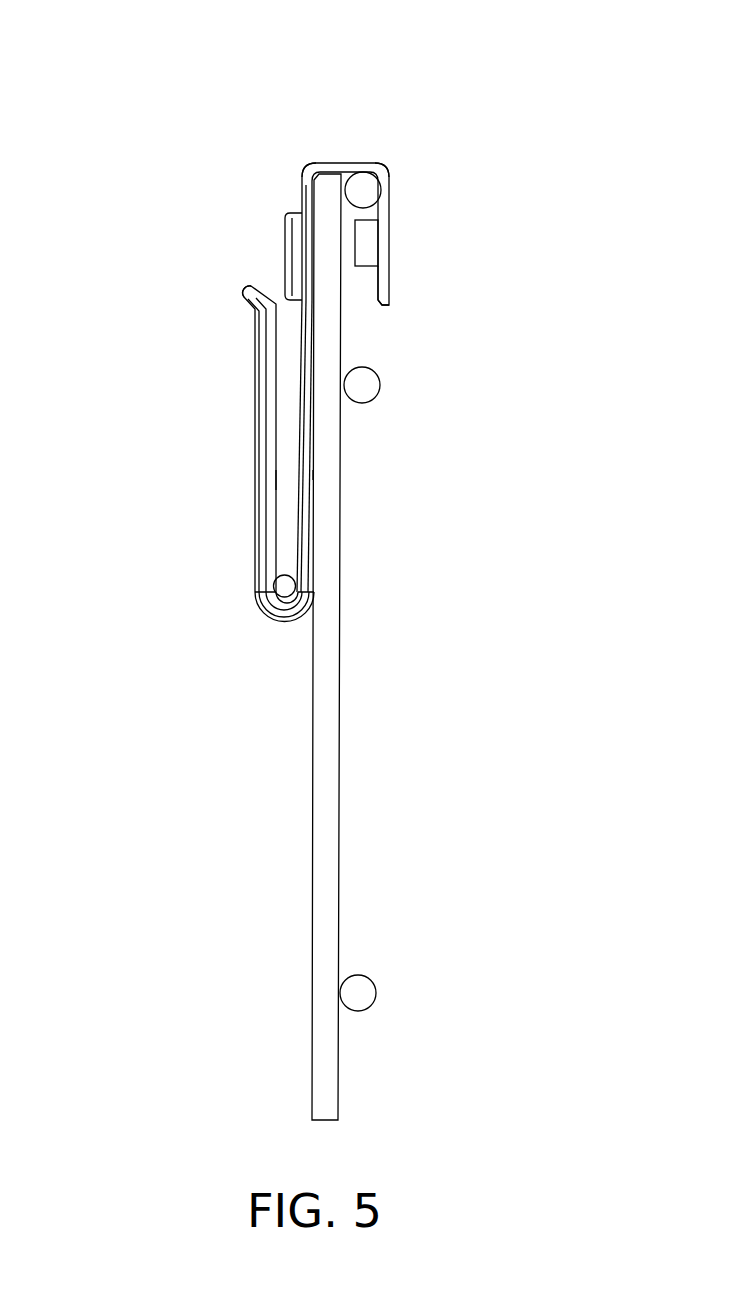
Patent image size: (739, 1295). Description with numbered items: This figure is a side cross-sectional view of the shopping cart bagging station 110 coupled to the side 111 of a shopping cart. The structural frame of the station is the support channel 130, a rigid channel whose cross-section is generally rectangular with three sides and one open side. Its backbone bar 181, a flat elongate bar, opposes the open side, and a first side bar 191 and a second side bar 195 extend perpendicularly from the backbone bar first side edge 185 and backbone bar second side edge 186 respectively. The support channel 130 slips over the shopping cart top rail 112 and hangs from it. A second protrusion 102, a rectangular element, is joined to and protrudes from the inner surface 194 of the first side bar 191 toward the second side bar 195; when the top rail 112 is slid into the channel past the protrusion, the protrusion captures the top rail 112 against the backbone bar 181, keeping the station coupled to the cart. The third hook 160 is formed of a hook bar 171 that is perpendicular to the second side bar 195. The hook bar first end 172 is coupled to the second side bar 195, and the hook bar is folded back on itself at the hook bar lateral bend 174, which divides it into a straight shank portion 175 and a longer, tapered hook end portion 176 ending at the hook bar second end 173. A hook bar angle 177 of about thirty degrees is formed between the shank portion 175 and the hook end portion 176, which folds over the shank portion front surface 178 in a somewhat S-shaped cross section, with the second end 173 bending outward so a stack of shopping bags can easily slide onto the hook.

The second protrusion 102 is at (366, 245).
The shopping cart bagging station 110 is at (214, 130).
The side 111 is at (330, 693).
The shopping cart top rail 112 is at (366, 191).
The support channel 130 is at (426, 84).
The third hook 160 is at (239, 660).
The hook bar 171 is at (310, 488).
The hook bar first end 172 is at (303, 357).
The hook bar second end 173 is at (248, 290).
The hook bar lateral bend 174 is at (285, 611).
The shank portion 175 is at (313, 470).
The hook end portion 176 is at (260, 528).
The hook bar angle 177 is at (278, 577).
The shank portion front surface 178 is at (296, 482).
The backbone bar 181 is at (340, 163).
The backbone bar first side edge 185 is at (390, 175).
The backbone bar second side edge 186 is at (302, 176).
The first side bar 191 is at (385, 275).
The inner surface 194 is at (372, 292).
The second side bar 195 is at (308, 250).